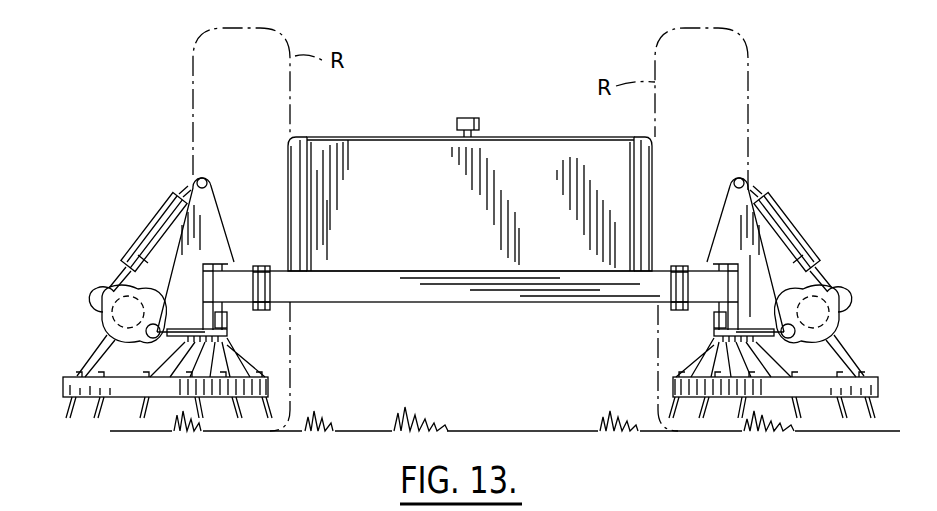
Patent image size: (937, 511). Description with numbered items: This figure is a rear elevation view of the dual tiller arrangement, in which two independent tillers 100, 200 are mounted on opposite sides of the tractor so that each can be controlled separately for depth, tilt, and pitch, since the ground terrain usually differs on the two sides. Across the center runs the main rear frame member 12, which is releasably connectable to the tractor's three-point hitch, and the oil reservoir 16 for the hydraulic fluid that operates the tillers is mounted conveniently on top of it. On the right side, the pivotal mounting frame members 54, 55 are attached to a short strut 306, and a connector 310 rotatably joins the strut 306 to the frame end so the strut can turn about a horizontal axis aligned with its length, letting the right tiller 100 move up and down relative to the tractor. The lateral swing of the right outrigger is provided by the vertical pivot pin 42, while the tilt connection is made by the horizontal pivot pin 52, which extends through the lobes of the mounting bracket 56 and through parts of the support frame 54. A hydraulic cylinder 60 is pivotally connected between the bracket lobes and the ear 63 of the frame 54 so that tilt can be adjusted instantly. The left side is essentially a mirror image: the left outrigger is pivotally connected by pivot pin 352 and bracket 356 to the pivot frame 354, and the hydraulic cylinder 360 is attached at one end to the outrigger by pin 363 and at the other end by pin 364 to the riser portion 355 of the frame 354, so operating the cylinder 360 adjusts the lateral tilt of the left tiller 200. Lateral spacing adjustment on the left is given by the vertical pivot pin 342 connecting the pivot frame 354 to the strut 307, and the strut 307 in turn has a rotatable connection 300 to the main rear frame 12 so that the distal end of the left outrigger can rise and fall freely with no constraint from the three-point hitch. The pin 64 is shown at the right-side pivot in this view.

The main rear frame member 12 is at (492, 303).
The oil reservoir 16 is at (437, 137).
The vertical pivot pin 42 is at (717, 314).
The horizontal pivot pin 52 is at (786, 340).
The support frame 54 is at (714, 344).
The frame member 55 is at (724, 198).
The mounting bracket 56 is at (842, 325).
The hydraulic cylinder 60 is at (803, 238).
The ear 63 is at (838, 296).
The pivot pin 64 is at (736, 177).
The rotary tiller apparatus 100 is at (848, 352).
The tiller apparatus 200 is at (100, 348).
The rotatable connection 300 is at (242, 305).
The short strut 306 is at (701, 258).
The strut 307 is at (232, 264).
The connector 310 is at (676, 312).
The vertical pivot pin 342 is at (228, 316).
The pivot pin 352 is at (145, 350).
The pivot frame 354 is at (172, 337).
The riser portion 355 is at (218, 201).
The bracket 356 is at (100, 322).
The hydraulic cylinder 360 is at (168, 212).
The pin 363 is at (112, 282).
The pin 364 is at (204, 177).